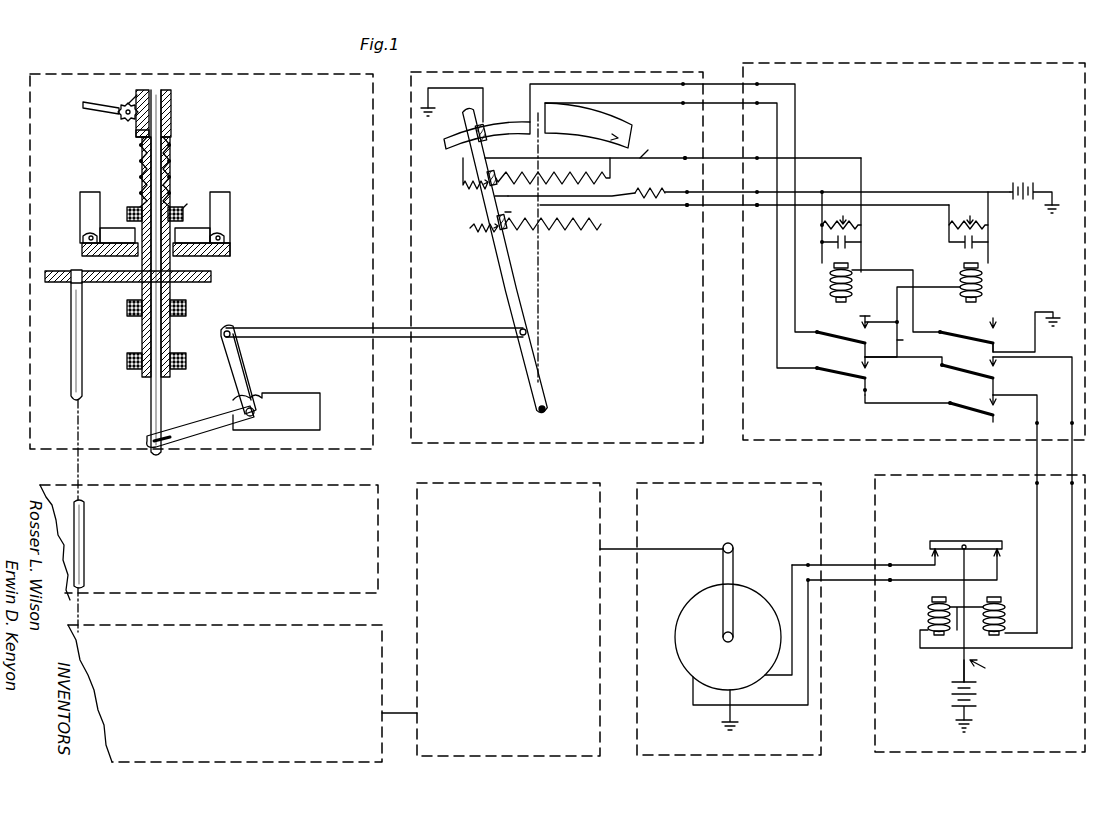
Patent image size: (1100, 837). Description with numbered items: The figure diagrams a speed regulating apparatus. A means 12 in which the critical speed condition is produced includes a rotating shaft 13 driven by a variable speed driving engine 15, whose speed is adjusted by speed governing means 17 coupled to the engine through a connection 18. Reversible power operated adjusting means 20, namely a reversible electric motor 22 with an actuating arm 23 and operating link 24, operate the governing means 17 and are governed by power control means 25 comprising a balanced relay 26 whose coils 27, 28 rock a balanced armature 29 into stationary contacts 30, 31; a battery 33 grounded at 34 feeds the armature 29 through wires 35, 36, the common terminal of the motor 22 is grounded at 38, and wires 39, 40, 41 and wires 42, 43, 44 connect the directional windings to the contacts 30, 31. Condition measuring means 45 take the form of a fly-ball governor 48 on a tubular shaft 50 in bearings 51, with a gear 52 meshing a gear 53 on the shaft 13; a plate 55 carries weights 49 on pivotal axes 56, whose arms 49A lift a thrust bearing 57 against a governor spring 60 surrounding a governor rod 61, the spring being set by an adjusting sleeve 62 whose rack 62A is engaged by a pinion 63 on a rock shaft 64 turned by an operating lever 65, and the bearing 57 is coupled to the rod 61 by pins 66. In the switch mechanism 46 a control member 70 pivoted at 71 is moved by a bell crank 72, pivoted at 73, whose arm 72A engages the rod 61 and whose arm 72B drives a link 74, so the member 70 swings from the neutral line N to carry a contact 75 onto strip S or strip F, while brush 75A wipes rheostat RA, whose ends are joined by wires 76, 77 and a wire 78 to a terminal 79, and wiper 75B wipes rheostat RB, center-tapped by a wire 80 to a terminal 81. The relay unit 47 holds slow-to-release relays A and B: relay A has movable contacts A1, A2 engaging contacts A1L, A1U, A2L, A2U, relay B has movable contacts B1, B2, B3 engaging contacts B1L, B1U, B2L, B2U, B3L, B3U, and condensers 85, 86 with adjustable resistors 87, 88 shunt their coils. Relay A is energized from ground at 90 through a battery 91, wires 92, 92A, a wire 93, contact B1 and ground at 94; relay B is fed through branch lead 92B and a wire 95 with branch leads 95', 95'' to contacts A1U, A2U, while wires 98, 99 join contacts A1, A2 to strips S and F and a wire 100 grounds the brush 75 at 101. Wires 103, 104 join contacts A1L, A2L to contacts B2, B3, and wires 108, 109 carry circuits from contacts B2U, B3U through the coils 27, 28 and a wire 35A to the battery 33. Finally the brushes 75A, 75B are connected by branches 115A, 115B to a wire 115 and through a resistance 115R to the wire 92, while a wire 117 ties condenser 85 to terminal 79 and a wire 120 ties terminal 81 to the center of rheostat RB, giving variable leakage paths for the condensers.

The means in which the critical speed condition is produced 12 is at (203, 592).
The rotating shaft 13 is at (84, 555).
The variable speed driving engine 15 is at (275, 625).
The speed governing means 17 is at (472, 757).
The connection 18 is at (393, 712).
The reversible power operated adjusting means 20 is at (668, 751).
The reversible electric motor 22 is at (688, 603).
The actuating arm 23 is at (733, 572).
The operating link 24 is at (645, 549).
The power control means 25 is at (921, 748).
The balanced relay 26 is at (985, 668).
The operating coil 27 is at (928, 635).
The operating coil 28 is at (1005, 630).
The balanced armature 29 is at (955, 541).
The stationary contact 30 is at (947, 564).
The stationary contact 31 is at (1000, 560).
The battery 33 is at (976, 698).
The ground 34 is at (968, 722).
The wire 35 is at (960, 670).
The wire 35A is at (957, 630).
The wire 36 is at (965, 590).
The ground 38 is at (728, 716).
The wire 39 is at (794, 580).
The wire 40 is at (835, 565).
The wire 41 is at (905, 565).
The wire 42 is at (780, 705).
The wire 43 is at (835, 583).
The wire 44 is at (914, 582).
The condition measuring means 45 is at (232, 446).
The switch mechanism 46 is at (576, 439).
The relay unit 47 is at (816, 436).
The fly-ball governor 48 is at (247, 243).
The centrifugal weights 49 is at (82, 192).
The inwardly projecting arms 49A is at (110, 230).
The tubular shaft 50 is at (142, 337).
The bearings 51 is at (186, 306).
The gear 52 is at (200, 282).
The gear 53 is at (72, 271).
The supporting plate 55 is at (228, 252).
The pivotal axes 56 is at (85, 236).
The anti-friction thrust bearing 57 is at (186, 205).
The adjustable governor spring 60 is at (167, 160).
The governor rod 61 is at (151, 402).
The adjusting sleeve 62 is at (172, 108).
The rack 62A is at (136, 130).
The pinion 63 is at (128, 100).
The horizontal rock shaft 64 is at (121, 118).
The operating lever 65 is at (83, 108).
The pins 66 is at (132, 207).
The shiftable control member 70 is at (494, 300).
The pivot 71 is at (538, 409).
The bell crank 72 is at (243, 378).
The bell crank arm 72A is at (192, 425).
The bell crank arm 72B is at (242, 352).
The pivot 73 is at (255, 411).
The link 74 is at (300, 328).
The contact 75 is at (486, 140).
The brush 75A is at (494, 172).
The wiper 75B is at (505, 230).
The wire 76 is at (545, 158).
The wire 77 is at (604, 170).
The wire 78 is at (654, 146).
The terminal 79 is at (684, 155).
The wire 80 is at (640, 207).
The terminal 81 is at (687, 208).
The condenser 85 is at (850, 248).
The condenser 86 is at (975, 248).
The adjustable resistor 87 is at (858, 228).
The adjustable resistor 88 is at (985, 228).
The ground 90 is at (1055, 200).
The battery 91 is at (1023, 180).
The wire 92 is at (905, 192).
The wire 92A is at (820, 216).
The branch lead 92B is at (988, 205).
The wire 93 is at (895, 270).
The ground 94 is at (1053, 310).
The wire 95 is at (912, 322).
The branch lead 95' is at (882, 334).
The branch lead 95'' is at (915, 337).
The wire 98 is at (797, 97).
The wire 99 is at (779, 128).
The wire 100 is at (465, 88).
The ground 101 is at (432, 105).
The wire 103 is at (920, 357).
The wire 104 is at (895, 403).
The wire 108 is at (1070, 408).
The wire 109 is at (1037, 460).
The wire 115 is at (612, 192).
The branch 115A is at (505, 194).
The branch 115B is at (511, 212).
The resistance 115R is at (650, 188).
The wire 117 is at (830, 158).
The wire 120 is at (724, 210).
The relay A is at (828, 300).
The movable relay contact A1 is at (830, 335).
The stationary relay contact A1U is at (866, 300).
The stationary relay contact A1L is at (865, 347).
The movable relay contact A2 is at (830, 370).
The stationary relay contact A2U is at (868, 368).
The stationary relay contact A2L is at (868, 388).
The relay B is at (985, 295).
The movable relay contact B1 is at (965, 338).
The idle stationary relay contact B1U is at (995, 318).
The stationary relay contact B1L is at (993, 345).
The movable relay contact B2 is at (965, 372).
The stationary relay contact B2U is at (996, 364).
The idle stationary relay contact B2L is at (995, 382).
The movable relay contact B3 is at (960, 408).
The stationary relay contact B3U is at (996, 402).
The idle stationary relay contact B3L is at (995, 420).
The arcuate contact strip F is at (620, 137).
The neutral position N is at (540, 305).
The rheostat RA is at (463, 190).
The rheostat RB is at (470, 232).
The arcuate contact strip S is at (446, 146).